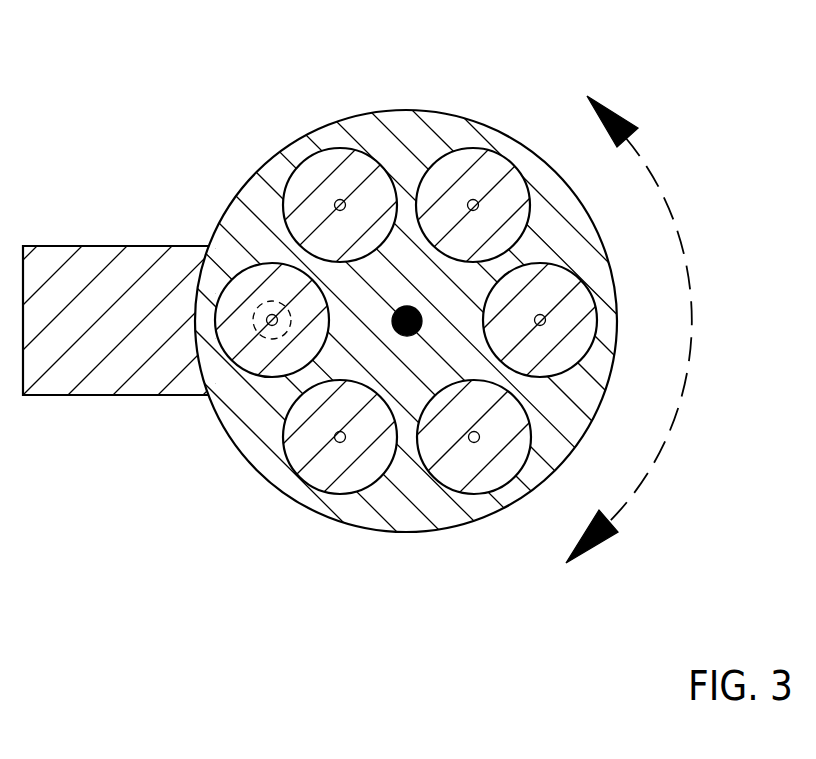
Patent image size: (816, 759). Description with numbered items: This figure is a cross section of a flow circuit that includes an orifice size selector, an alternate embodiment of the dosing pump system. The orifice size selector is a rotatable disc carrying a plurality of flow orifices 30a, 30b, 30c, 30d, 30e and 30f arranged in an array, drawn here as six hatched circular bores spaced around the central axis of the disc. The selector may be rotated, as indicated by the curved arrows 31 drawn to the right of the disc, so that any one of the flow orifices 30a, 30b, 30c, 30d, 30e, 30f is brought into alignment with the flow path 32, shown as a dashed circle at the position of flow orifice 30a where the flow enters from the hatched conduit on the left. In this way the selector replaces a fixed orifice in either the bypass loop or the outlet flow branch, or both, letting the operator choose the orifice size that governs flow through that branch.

The flow orifice 30a is at (257, 267).
The flow orifice 30b is at (315, 150).
The flow orifice 30c is at (473, 150).
The flow orifice 30d is at (600, 337).
The flow orifice 30e is at (482, 494).
The flow orifice 30f is at (350, 494).
The arrows 31 is at (684, 234).
The flow path 32 is at (273, 344).